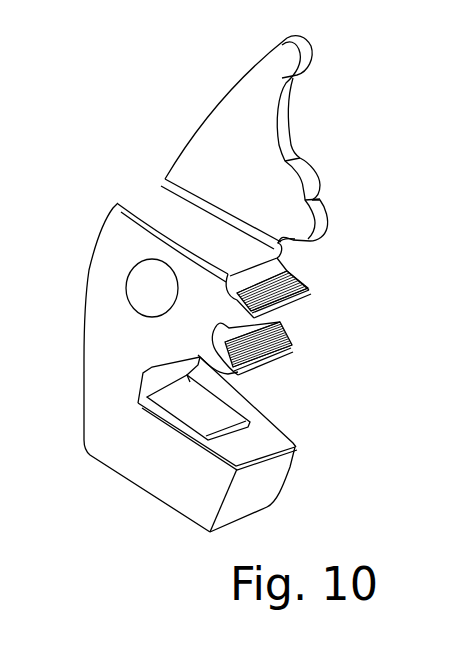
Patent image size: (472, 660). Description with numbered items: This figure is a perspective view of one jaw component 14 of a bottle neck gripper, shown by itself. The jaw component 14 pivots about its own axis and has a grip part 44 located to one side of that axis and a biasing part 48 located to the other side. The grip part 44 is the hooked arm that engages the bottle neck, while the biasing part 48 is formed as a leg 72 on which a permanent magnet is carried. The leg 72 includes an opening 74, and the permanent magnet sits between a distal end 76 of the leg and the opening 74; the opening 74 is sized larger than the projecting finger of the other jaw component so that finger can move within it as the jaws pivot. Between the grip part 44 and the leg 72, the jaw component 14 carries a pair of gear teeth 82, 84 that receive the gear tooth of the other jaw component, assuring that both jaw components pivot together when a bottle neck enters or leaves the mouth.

The jaw component 14 is at (162, 116).
The grip part 44 is at (247, 100).
The biasing part 48 is at (103, 312).
The leg 72 is at (170, 497).
The opening 74 is at (220, 417).
The distal end 76 is at (260, 483).
The gear tooth 82 is at (283, 338).
The gear tooth 84 is at (304, 285).